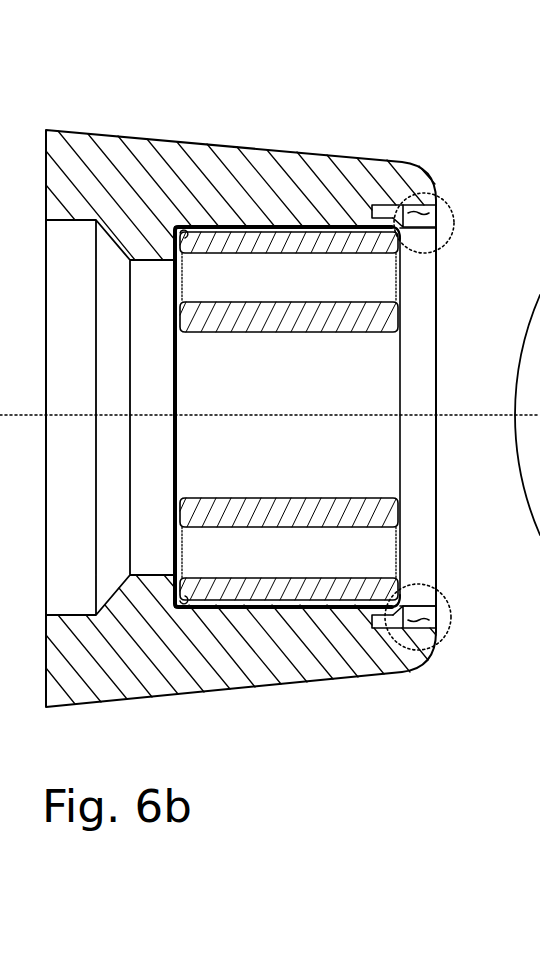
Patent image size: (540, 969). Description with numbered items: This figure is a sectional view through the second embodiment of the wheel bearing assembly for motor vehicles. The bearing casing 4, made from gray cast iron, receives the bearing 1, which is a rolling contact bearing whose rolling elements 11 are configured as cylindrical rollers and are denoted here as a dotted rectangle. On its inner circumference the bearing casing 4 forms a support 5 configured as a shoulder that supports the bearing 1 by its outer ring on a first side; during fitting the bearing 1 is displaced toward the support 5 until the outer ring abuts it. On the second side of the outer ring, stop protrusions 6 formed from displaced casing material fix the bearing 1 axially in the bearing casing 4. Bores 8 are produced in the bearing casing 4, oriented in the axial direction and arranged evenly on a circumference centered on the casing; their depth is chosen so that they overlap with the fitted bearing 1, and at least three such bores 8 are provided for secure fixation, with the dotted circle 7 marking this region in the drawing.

The bearing 1 is at (333, 276).
The bearing casing 4 is at (280, 652).
The support 5 is at (170, 217).
The stop protrusions 6 is at (412, 233).
The annular groove 7 is at (454, 224).
The bores 8 is at (437, 207).
The rolling elements 11 is at (401, 272).